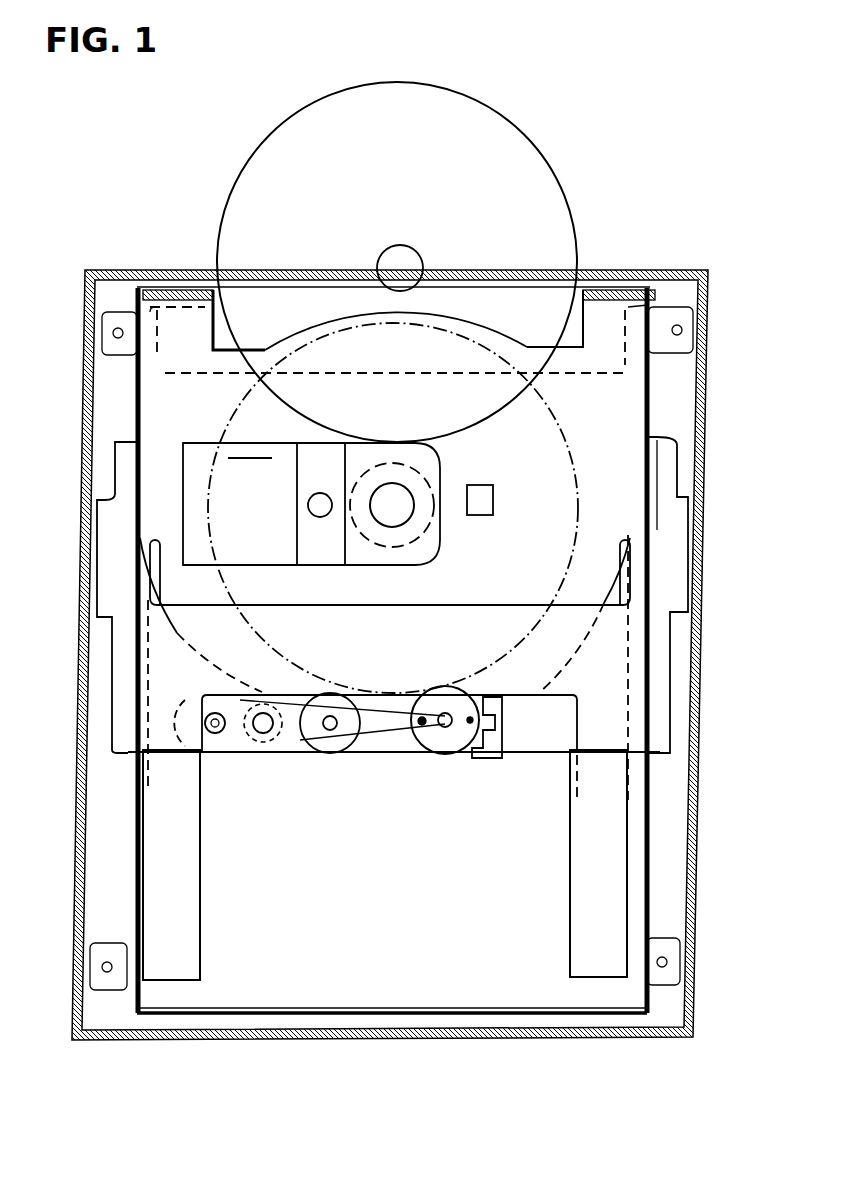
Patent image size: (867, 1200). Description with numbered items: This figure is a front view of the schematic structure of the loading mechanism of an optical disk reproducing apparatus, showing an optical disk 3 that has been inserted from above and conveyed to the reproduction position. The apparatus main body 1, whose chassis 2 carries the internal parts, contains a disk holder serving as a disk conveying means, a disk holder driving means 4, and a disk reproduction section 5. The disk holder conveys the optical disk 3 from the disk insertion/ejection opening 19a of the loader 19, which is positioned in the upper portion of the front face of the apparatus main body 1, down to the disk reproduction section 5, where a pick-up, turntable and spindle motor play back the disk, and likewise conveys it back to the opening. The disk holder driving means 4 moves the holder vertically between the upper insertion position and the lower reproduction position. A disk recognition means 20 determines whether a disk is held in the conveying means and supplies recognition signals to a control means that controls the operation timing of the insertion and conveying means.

The apparatus main body 1 is at (665, 268).
The chassis 2 is at (648, 820).
The optical disk 3 is at (545, 151).
The disk holder driving means 4 is at (433, 760).
The disk reproduction section 5 is at (438, 525).
The loader 19 is at (538, 760).
The disk insertion/ejection opening 19a is at (580, 300).
The disk recognition means 20 is at (493, 492).